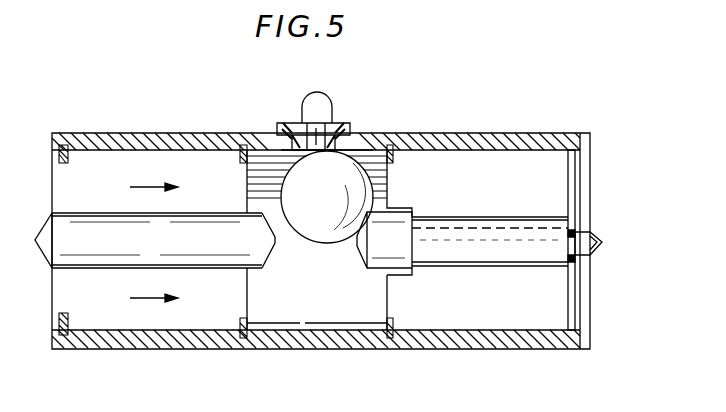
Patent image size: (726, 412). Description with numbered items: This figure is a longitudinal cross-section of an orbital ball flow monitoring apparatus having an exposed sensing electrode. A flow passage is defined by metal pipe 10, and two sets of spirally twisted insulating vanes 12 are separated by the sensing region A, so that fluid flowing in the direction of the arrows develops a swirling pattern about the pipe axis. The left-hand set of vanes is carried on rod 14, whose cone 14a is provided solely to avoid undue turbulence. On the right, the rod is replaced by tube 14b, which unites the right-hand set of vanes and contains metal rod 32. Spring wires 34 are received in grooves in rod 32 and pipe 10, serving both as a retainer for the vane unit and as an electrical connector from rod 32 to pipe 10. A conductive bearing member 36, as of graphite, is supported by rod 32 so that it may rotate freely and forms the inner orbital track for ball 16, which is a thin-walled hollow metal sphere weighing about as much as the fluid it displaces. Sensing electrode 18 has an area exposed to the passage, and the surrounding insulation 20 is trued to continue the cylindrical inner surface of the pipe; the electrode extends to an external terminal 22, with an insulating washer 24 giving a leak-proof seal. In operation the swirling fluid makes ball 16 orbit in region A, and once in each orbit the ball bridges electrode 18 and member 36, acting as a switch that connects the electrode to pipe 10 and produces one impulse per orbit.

The metal pipe 10 is at (98, 133).
The vanes 12 is at (163, 160).
The rod 14 is at (84, 268).
The cone 14a is at (275, 246).
The tube 14b is at (490, 235).
The ball 16 is at (358, 165).
The sensing electrode 18 is at (313, 162).
The insulation 20 is at (277, 135).
The external terminal 22 is at (322, 103).
The washer 24 is at (297, 123).
The metal rod 32 is at (450, 228).
The spring wires 34 is at (578, 208).
The conductive bearing member 36 is at (398, 227).
The sensing region A is at (278, 306).